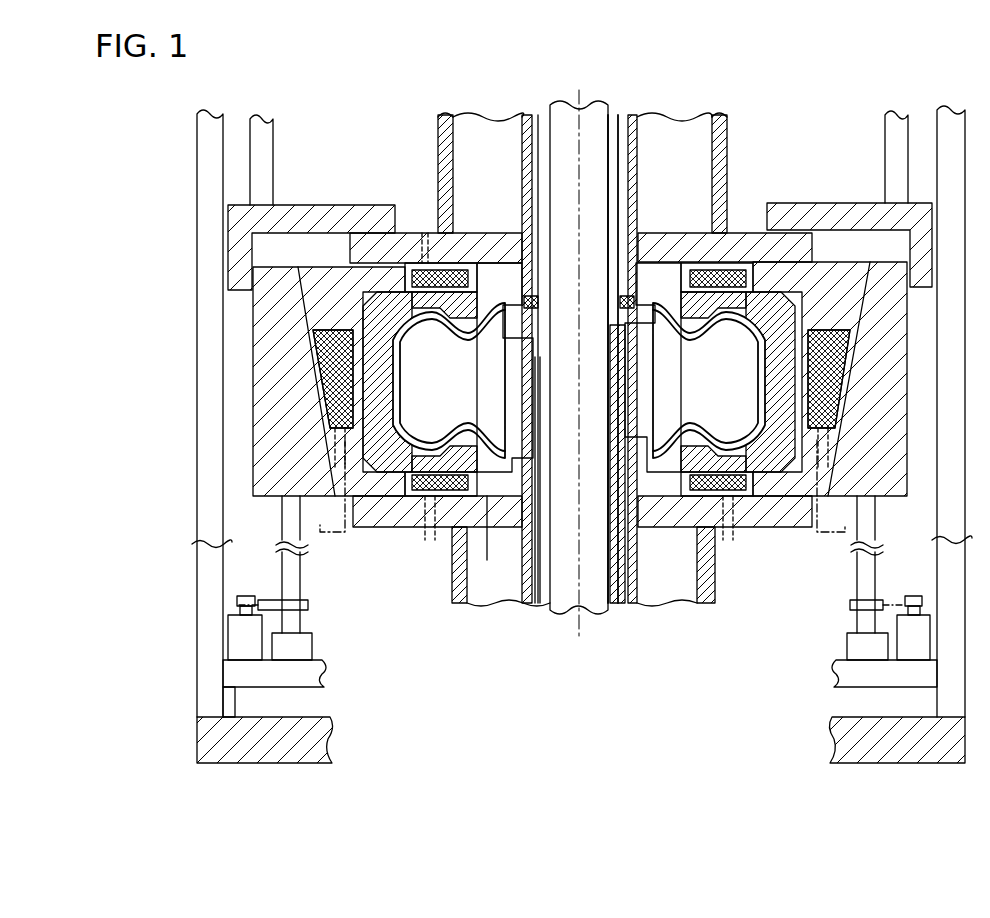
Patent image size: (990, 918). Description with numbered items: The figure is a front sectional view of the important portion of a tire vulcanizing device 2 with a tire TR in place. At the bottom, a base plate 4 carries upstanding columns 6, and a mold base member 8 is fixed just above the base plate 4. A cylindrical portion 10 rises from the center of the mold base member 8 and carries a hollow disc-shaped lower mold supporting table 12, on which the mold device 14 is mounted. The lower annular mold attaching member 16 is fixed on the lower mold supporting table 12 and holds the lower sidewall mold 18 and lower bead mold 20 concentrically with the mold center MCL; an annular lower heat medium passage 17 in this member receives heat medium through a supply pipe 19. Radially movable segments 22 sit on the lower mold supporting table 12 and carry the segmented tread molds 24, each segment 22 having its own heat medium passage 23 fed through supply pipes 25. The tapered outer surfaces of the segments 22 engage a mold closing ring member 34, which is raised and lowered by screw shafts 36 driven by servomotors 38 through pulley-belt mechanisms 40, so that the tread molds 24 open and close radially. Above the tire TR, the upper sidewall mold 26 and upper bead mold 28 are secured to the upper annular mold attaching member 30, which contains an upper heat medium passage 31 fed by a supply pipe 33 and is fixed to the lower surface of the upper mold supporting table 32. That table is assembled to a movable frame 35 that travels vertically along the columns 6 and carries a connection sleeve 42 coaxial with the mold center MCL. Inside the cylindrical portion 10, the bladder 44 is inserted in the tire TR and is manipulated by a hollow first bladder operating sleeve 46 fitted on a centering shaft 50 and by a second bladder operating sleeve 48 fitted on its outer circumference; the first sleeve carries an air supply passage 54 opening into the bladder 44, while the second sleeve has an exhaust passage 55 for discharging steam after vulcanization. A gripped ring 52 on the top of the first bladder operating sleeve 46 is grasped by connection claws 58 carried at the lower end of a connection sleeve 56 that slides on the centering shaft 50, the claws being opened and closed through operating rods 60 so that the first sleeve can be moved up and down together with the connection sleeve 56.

The tire vulcanizing device 2 is at (419, 127).
The base plate 4 is at (306, 726).
The columns 6 is at (213, 532).
The mold base member 8 is at (316, 659).
The cylindrical portion 10 is at (716, 574).
The lower mold supporting table 12 is at (403, 528).
The mold device 14 is at (327, 235).
The lower annular mold attaching member 16 is at (492, 542).
The lower heat medium passage 17 is at (460, 520).
The lower sidewall mold 18 is at (494, 444).
The supply pipe 19 is at (428, 520).
The lower bead mold 20 is at (480, 434).
The segments 22 is at (303, 298).
The heat medium passages 23 is at (318, 370).
The segmented tread molds 24 is at (366, 443).
The supply pipes 25 is at (345, 537).
The upper sidewall mold 26 is at (722, 314).
The upper bead mold 28 is at (690, 332).
The upper annular mold attaching member 30 is at (769, 218).
The upper heat medium passage 31 is at (446, 270).
The upper mold supporting table 32 is at (712, 228).
The supply pipe 33 is at (420, 248).
The mold closing ring member 34 is at (878, 284).
The movable frame 35 is at (886, 144).
The screw shafts 36 is at (290, 572).
The servomotors 38 is at (246, 652).
The pulley-belt mechanisms 40 is at (332, 619).
The connection sleeve 42 is at (440, 152).
The bladder 44 is at (456, 334).
The first bladder operating sleeve 46 is at (626, 400).
The second bladder operating sleeve 48 is at (650, 451).
The centering shaft 50 is at (565, 180).
The gripped ring 52 is at (608, 317).
The air supply passage 54 is at (532, 356).
The exhaust passage 55 is at (634, 452).
The connection sleeve 56 is at (635, 174).
The connection claws 58 is at (630, 330).
The operating rods 60 is at (624, 150).
The tire TR is at (401, 396).
The mold center MCL is at (580, 629).